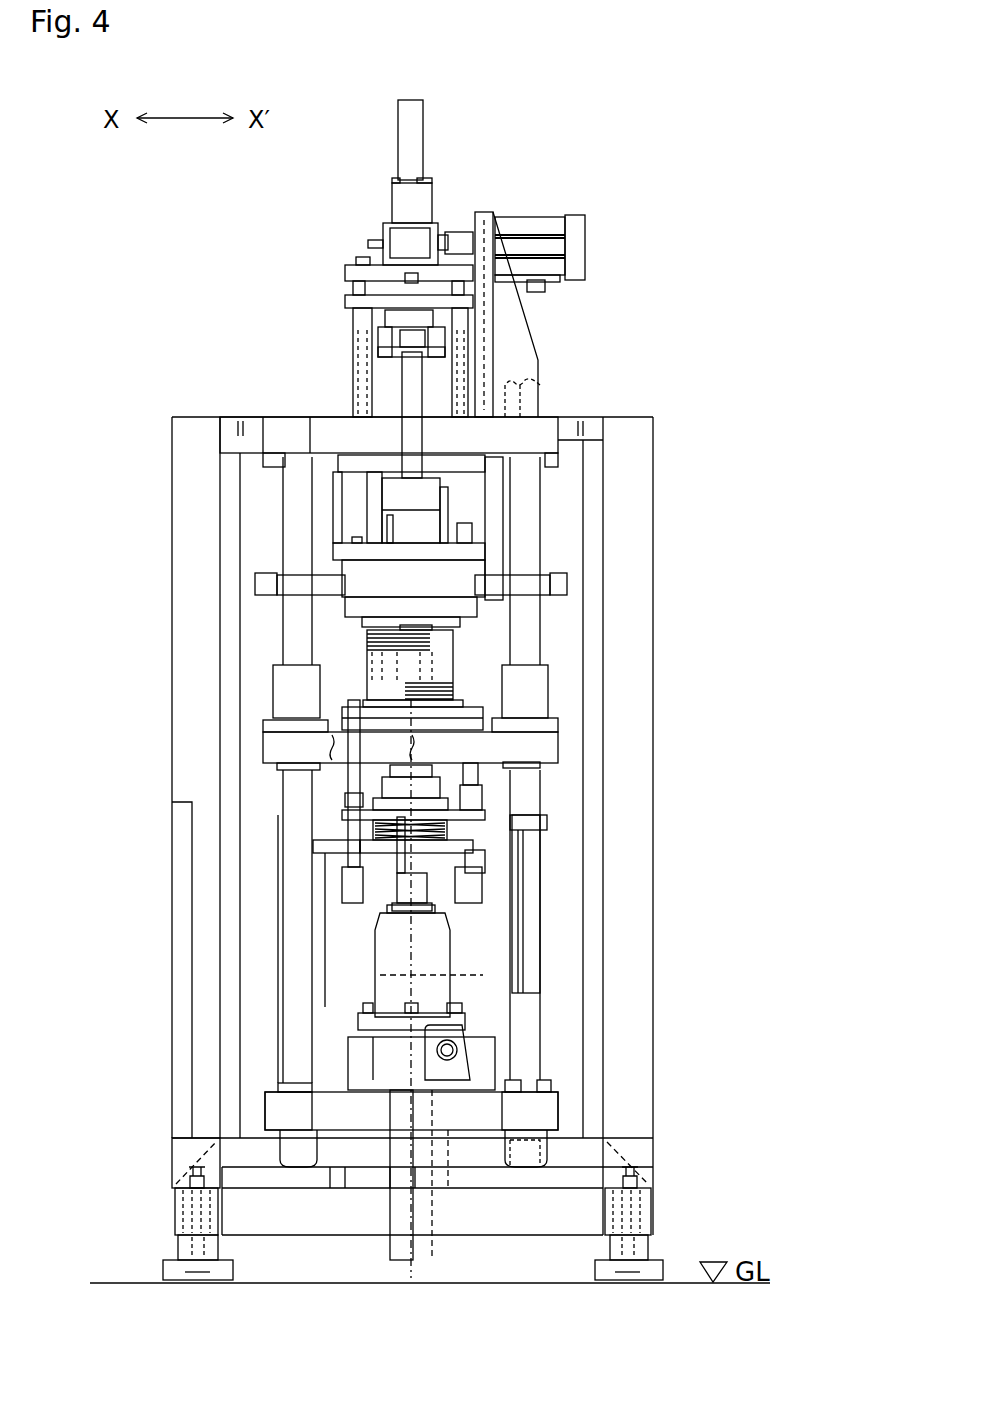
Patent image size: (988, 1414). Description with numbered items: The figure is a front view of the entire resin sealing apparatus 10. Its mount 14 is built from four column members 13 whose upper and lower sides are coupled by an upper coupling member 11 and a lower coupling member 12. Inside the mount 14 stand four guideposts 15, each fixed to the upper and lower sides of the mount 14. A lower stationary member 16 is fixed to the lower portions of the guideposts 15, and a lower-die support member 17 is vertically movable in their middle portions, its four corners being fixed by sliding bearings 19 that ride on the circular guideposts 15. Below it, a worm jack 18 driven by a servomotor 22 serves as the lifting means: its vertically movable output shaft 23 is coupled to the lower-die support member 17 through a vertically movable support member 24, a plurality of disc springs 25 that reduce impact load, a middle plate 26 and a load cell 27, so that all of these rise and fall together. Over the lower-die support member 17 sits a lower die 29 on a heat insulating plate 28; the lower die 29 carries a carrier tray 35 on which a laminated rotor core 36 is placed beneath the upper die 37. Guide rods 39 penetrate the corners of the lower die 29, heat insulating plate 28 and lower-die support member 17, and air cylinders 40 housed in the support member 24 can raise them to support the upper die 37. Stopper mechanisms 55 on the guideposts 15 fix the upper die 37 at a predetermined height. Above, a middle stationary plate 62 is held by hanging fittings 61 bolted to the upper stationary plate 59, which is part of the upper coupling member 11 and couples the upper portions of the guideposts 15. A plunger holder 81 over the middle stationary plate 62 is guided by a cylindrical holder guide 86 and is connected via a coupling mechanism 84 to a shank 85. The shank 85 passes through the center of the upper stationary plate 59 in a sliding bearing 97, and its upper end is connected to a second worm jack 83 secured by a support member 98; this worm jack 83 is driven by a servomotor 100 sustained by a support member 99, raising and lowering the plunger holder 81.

The resin sealing apparatus 10 is at (663, 305).
The upper coupling member 11 is at (574, 415).
The lower coupling member 12 is at (550, 1213).
The column member 13 is at (197, 780).
The mount 14 is at (657, 460).
The guidepost 15 is at (297, 963).
The lower stationary member 16 is at (527, 1117).
The lower-die support member 17 is at (468, 715).
The worm jack 18 is at (470, 955).
The sliding bearing 19 is at (290, 697).
The servomotor 22 is at (475, 993).
The output shaft 23 is at (397, 893).
The support member 24 is at (445, 877).
The disc spring 25 is at (482, 815).
The middle plate 26 is at (525, 750).
The load cell 27 is at (398, 788).
The heat insulating plate 28 is at (473, 725).
The lower die 29 is at (457, 717).
The carrier tray 35 is at (360, 697).
The laminated rotor core 36 is at (360, 650).
The upper die 37 is at (333, 606).
The guide rod 39 is at (330, 713).
The air cylinder 40 is at (352, 888).
The stopper mechanism 55 is at (265, 568).
The upper stationary plate 59 is at (532, 436).
The hanging fitting 61 is at (350, 462).
The middle stationary plate 62 is at (360, 555).
The plunger holder 81 is at (377, 488).
The worm jack 83 is at (387, 208).
The coupling mechanism 84 is at (385, 478).
The shank 85 is at (410, 372).
The holder guide 86 is at (375, 515).
The sliding bearing 97 is at (393, 440).
The support member 98 is at (350, 338).
The support member 99 is at (543, 322).
The servomotor 100 is at (525, 217).